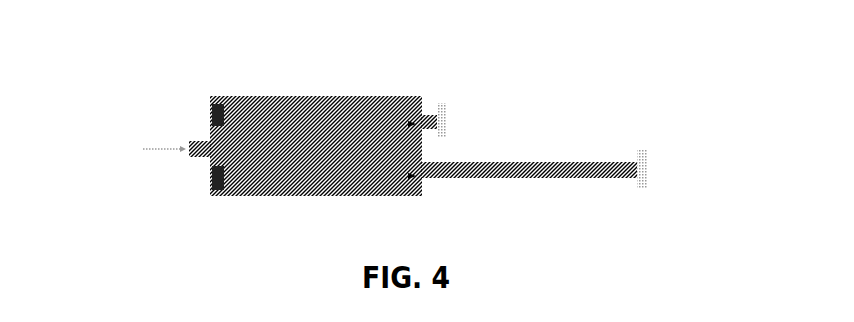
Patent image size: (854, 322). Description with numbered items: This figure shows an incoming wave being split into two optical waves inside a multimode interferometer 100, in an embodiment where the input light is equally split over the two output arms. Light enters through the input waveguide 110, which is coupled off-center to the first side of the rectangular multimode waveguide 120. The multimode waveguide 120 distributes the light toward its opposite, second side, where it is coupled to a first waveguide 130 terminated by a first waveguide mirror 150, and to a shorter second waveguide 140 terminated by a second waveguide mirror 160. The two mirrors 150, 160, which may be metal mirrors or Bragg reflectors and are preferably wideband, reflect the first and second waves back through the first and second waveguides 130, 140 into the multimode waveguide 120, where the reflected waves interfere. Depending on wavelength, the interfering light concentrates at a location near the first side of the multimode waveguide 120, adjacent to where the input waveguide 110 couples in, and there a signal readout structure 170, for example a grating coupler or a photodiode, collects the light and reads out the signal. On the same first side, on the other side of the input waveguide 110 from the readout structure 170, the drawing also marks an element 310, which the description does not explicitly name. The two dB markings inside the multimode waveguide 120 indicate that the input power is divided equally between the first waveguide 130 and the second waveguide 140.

The multimode interferometer 100 is at (136, 48).
The input waveguide 110 is at (200, 143).
The multimode waveguide 120 is at (365, 182).
The first waveguide 130 is at (503, 176).
The second waveguide 140 is at (427, 113).
The first waveguide mirror 150 is at (645, 172).
The second waveguide mirror 160 is at (444, 115).
The signal readout structure 170 is at (218, 180).
The upper termination load 310 is at (213, 113).